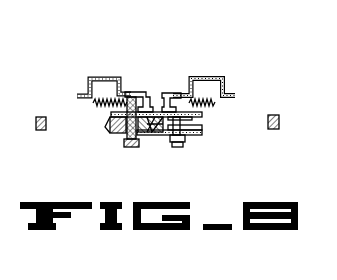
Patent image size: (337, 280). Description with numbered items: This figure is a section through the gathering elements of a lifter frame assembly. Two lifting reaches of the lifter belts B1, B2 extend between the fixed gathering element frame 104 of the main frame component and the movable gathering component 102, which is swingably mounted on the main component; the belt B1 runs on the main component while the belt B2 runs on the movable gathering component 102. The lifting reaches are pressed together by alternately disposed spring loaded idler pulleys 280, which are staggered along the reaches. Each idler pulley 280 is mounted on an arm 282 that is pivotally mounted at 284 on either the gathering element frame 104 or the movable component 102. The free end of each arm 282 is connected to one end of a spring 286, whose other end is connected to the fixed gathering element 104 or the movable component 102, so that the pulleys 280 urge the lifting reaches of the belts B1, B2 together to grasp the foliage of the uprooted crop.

The movable gathering component 102 is at (211, 72).
The gathering element frame 104 is at (100, 72).
The spring loaded idler pulley 280 is at (113, 133).
The arm 282 is at (167, 94).
The pivot mounting 284 is at (176, 147).
The spring 286 is at (93, 103).
The lifter belt B1 is at (43, 131).
The lifter belt B2 is at (280, 122).